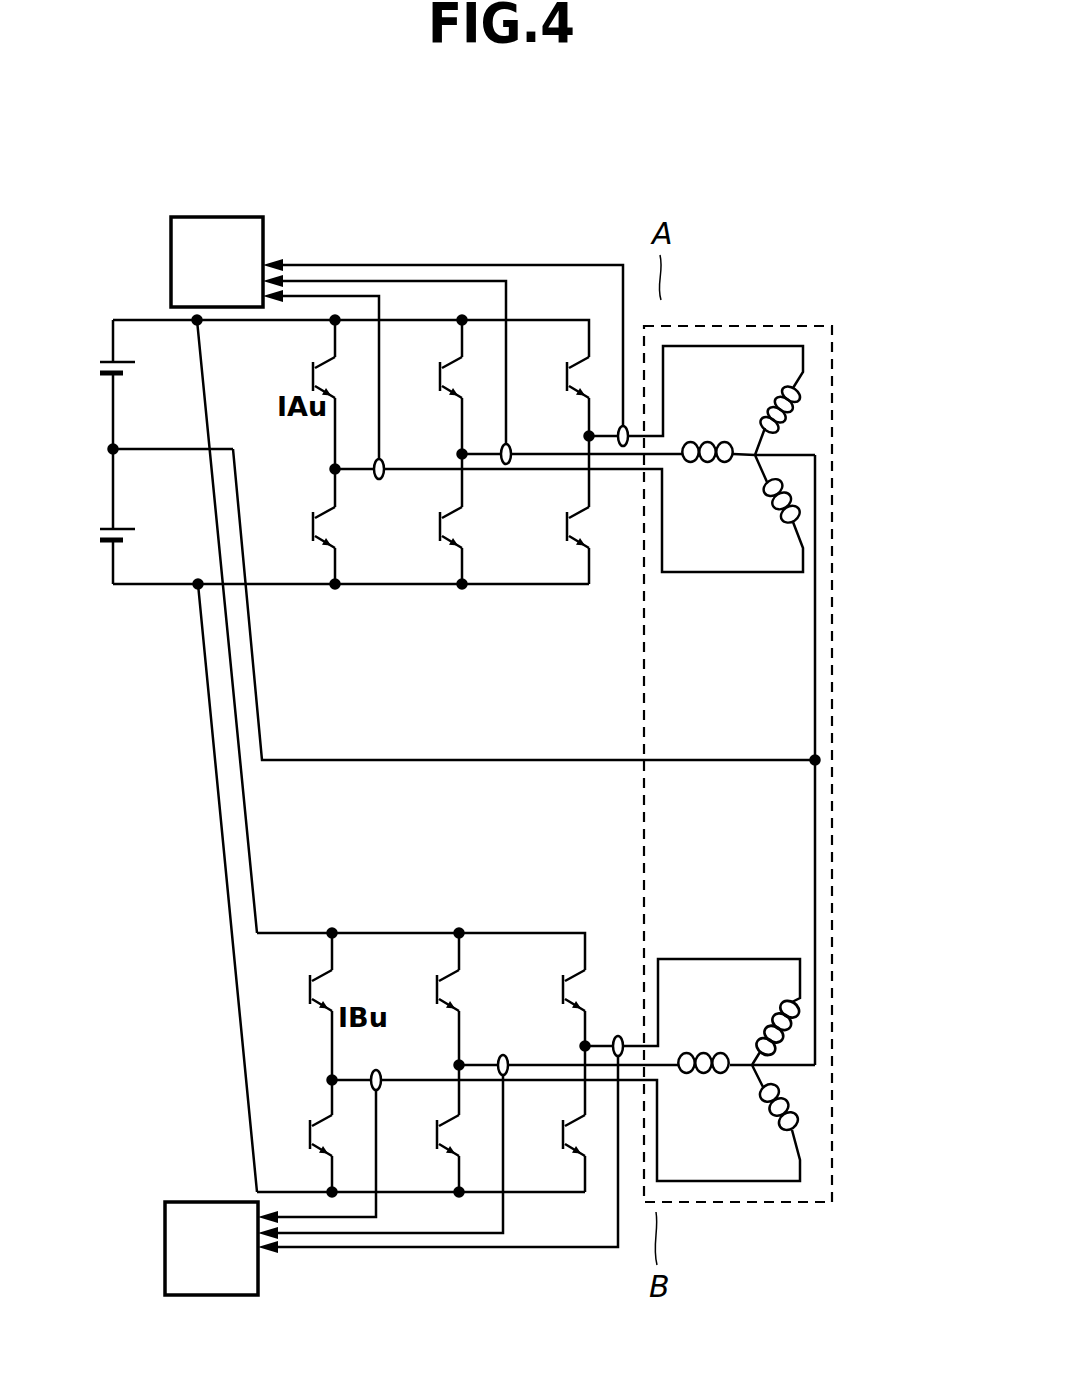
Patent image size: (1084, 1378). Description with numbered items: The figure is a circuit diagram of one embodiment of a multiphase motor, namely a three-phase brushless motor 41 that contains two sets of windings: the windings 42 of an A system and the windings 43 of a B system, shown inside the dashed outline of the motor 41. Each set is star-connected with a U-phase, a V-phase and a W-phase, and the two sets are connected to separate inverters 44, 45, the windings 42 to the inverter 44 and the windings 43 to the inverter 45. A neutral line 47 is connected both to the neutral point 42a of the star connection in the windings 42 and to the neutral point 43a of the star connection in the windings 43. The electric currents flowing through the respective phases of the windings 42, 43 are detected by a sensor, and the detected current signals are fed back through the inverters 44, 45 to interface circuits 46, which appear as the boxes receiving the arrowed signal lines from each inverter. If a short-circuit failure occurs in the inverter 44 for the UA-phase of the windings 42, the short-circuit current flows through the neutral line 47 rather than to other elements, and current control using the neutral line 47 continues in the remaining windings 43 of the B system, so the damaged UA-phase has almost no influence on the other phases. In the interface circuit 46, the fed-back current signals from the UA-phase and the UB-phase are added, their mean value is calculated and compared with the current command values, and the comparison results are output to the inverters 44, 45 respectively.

The three-phase brushless motor 41 is at (820, 296).
The windings of the A system 42 is at (745, 340).
The neutral point of the A-system star connection 42a is at (758, 452).
The windings of the B system 43 is at (743, 1203).
The neutral point of the B-system star connection 43a is at (758, 1068).
The inverter 44 is at (540, 291).
The inverter 45 is at (540, 1215).
The interface circuit 46 is at (215, 217).
The neutral line 47 is at (757, 762).